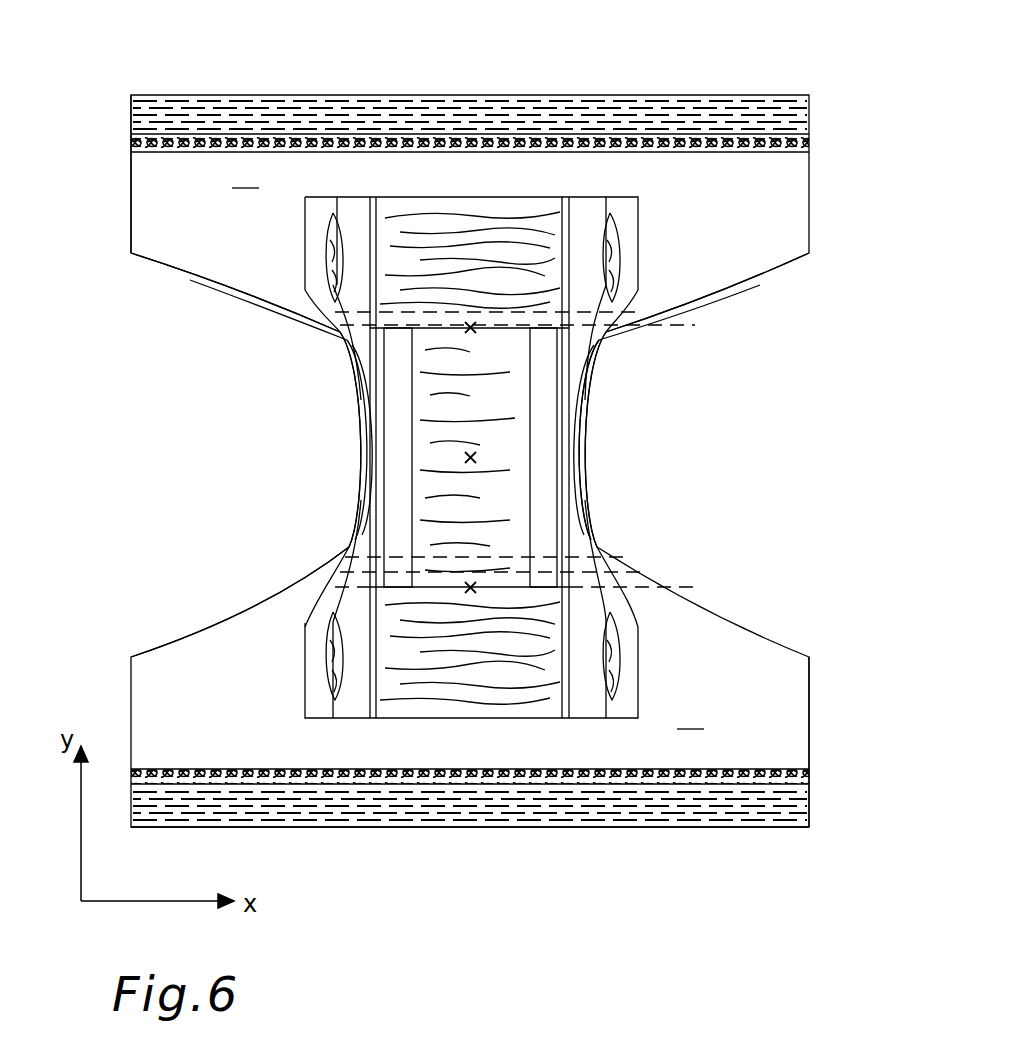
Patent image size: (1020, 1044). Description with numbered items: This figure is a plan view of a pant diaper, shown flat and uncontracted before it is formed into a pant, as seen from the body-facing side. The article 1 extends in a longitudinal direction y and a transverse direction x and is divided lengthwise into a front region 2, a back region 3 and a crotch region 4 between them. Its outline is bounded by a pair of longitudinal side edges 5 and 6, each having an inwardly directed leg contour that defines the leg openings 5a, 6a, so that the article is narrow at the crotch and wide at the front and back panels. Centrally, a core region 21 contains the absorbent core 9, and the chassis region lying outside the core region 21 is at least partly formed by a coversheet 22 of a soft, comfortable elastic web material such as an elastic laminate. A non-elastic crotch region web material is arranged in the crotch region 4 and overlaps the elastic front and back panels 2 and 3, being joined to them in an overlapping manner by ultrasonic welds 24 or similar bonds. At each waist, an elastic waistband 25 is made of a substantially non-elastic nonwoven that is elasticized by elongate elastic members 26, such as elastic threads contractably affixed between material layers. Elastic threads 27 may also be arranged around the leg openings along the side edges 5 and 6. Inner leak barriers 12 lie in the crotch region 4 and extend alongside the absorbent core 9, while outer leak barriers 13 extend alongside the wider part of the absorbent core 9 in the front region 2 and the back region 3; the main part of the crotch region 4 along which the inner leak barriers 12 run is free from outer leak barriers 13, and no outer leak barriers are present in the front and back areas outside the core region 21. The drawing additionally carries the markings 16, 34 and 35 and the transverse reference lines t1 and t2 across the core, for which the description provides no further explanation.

The absorbent article 1 is at (811, 36).
The front region 2 is at (780, 726).
The back region 3 is at (766, 197).
The crotch region 4 is at (587, 421).
The longitudinal side edge 5 is at (132, 188).
The leg opening 5a is at (336, 361).
The longitudinal side edge 6 is at (809, 745).
The leg opening 6a is at (601, 353).
The absorbent core 9 is at (447, 233).
The inner leak barrier 12 is at (400, 450).
The outer leak barrier 13 is at (348, 272).
The fastening band 16 is at (266, 770).
The core region 21 is at (647, 208).
The coversheet 22 is at (468, 446).
The ultrasonic welds 24 is at (336, 350).
The elastic waistband 25 is at (340, 95).
The elongate elastic members 26 is at (688, 98).
The elastic threads 27 is at (217, 289).
The center point 34 is at (475, 457).
The reference point 35 is at (686, 1040).
The first transverse line t1 is at (681, 588).
The second transverse line t2 is at (693, 328).